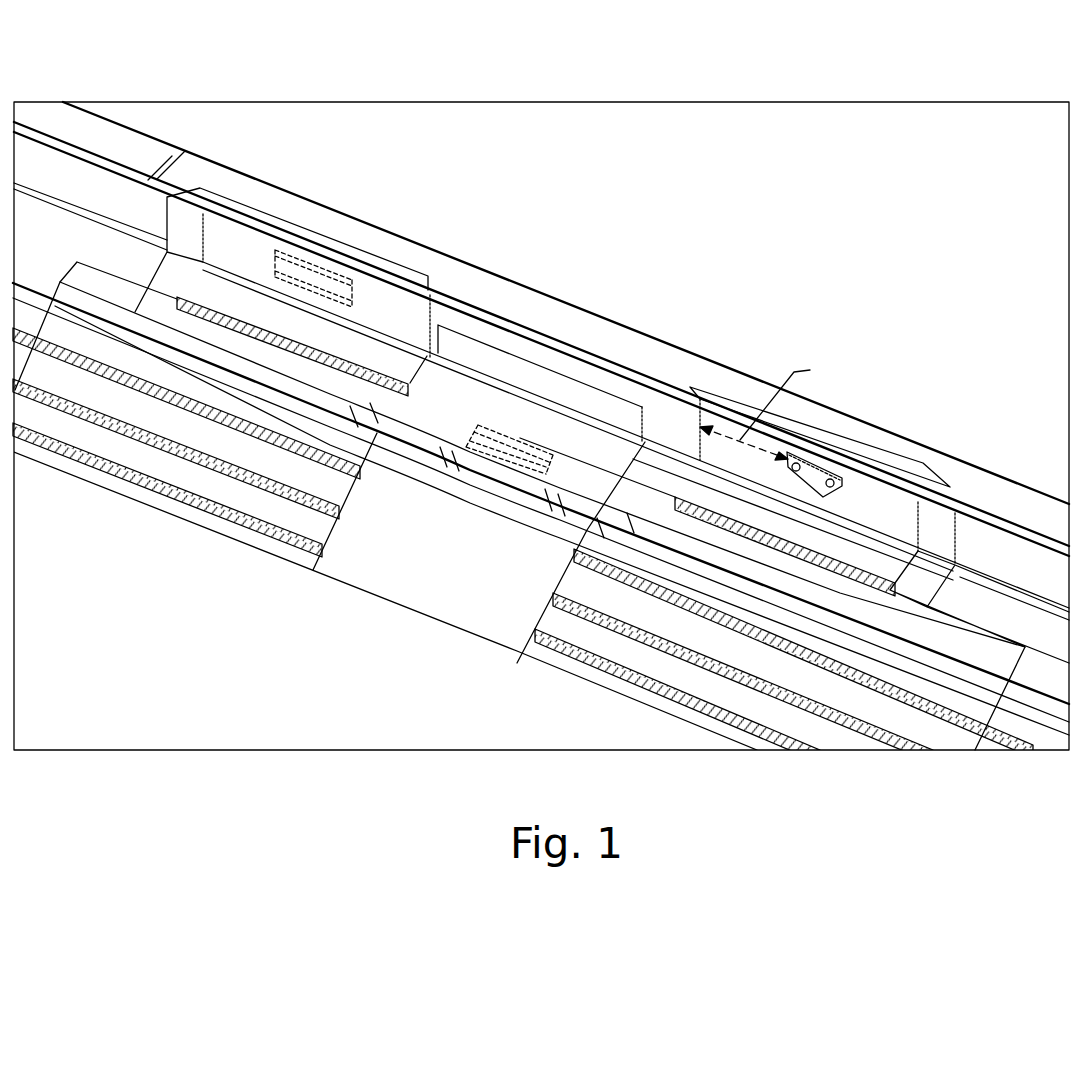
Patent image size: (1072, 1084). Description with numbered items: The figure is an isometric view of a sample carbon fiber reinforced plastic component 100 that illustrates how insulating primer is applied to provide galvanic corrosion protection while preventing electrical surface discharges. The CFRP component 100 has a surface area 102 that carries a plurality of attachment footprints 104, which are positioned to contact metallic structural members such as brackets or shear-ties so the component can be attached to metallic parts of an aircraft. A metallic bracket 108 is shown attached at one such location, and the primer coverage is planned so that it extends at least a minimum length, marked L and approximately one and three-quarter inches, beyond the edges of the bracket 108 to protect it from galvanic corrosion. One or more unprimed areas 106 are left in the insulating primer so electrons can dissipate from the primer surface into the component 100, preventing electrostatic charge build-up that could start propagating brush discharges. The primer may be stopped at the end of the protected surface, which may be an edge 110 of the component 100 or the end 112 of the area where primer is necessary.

The carbon fiber reinforced plastic (CFRP) component 100 is at (306, 164).
The surface area 102 is at (978, 545).
The attachment footprints 104 is at (308, 264).
The unprimed areas 106 is at (408, 390).
The metallic bracket 108 is at (803, 460).
The edge 110 is at (248, 547).
The end of primed area 112 is at (172, 160).